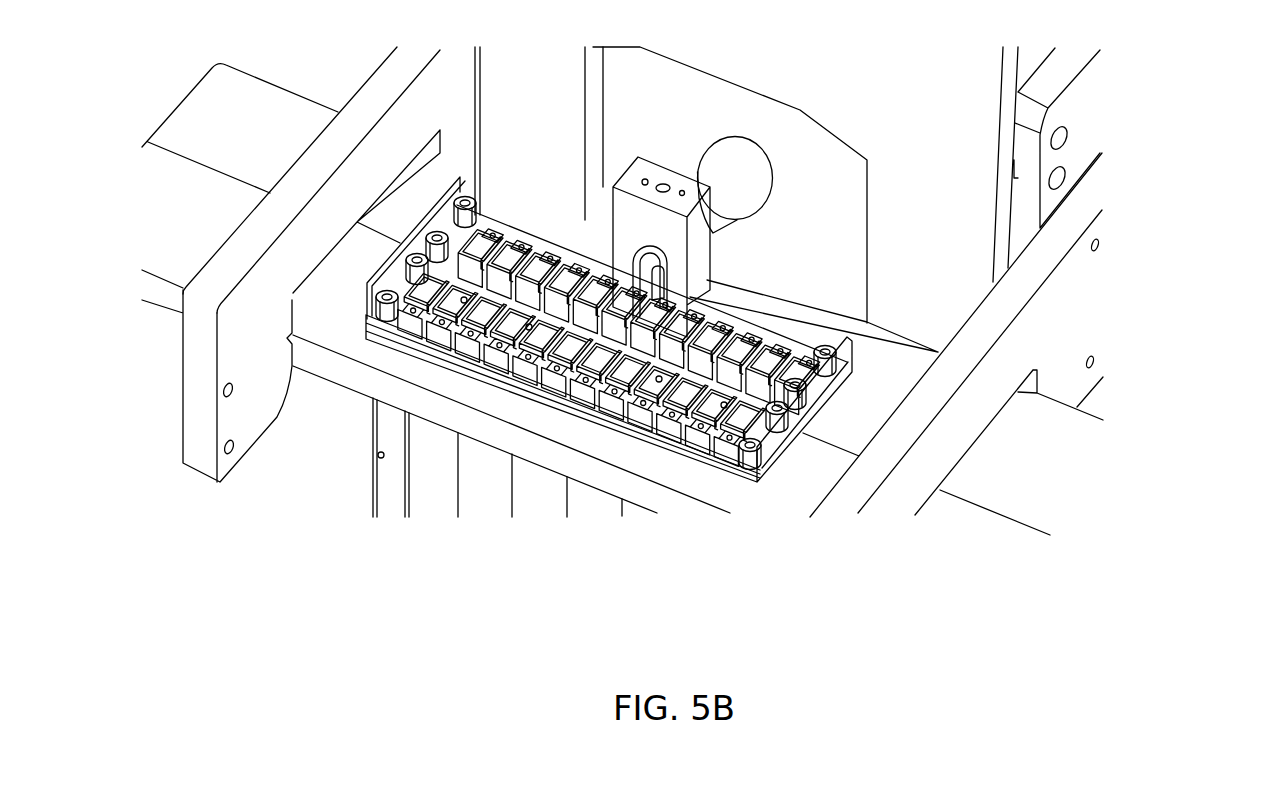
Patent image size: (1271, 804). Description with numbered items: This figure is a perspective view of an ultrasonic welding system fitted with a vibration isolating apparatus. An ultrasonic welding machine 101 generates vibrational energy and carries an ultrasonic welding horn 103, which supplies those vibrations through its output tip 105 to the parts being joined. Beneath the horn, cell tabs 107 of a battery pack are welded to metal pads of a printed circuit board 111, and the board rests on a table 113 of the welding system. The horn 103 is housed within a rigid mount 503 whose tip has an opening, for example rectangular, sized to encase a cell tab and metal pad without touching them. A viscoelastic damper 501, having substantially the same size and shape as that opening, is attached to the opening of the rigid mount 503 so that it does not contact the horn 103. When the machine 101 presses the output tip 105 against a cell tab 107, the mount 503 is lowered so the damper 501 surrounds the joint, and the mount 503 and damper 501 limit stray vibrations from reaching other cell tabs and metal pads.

The ultrasonic welding machine 101 is at (800, 127).
The ultrasonic welding horn 103 is at (687, 149).
The output tip 105 is at (622, 279).
The cell tab 107 is at (588, 378).
The printed circuit board 111 is at (356, 275).
The table 113 is at (183, 123).
The damper 501 is at (625, 336).
The rigid mount 503 is at (704, 258).